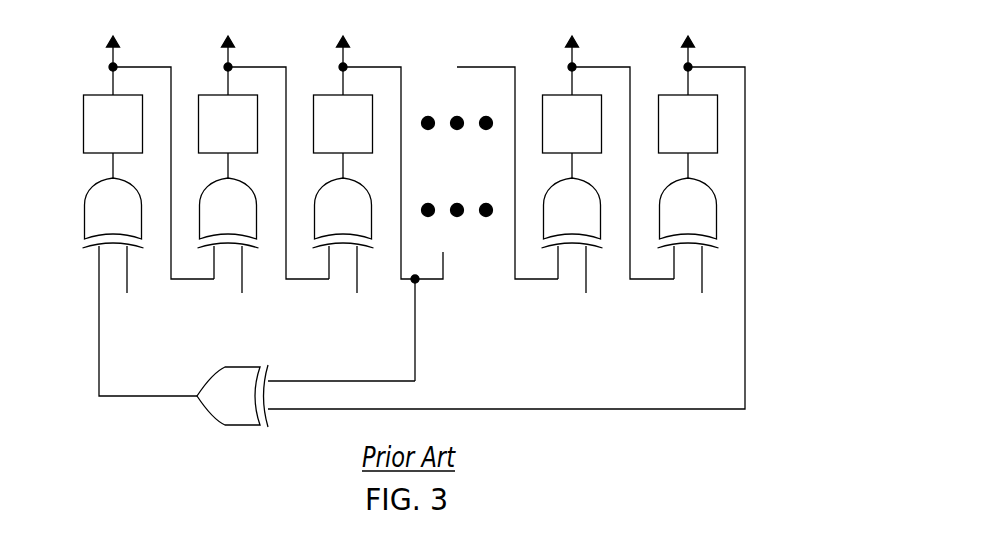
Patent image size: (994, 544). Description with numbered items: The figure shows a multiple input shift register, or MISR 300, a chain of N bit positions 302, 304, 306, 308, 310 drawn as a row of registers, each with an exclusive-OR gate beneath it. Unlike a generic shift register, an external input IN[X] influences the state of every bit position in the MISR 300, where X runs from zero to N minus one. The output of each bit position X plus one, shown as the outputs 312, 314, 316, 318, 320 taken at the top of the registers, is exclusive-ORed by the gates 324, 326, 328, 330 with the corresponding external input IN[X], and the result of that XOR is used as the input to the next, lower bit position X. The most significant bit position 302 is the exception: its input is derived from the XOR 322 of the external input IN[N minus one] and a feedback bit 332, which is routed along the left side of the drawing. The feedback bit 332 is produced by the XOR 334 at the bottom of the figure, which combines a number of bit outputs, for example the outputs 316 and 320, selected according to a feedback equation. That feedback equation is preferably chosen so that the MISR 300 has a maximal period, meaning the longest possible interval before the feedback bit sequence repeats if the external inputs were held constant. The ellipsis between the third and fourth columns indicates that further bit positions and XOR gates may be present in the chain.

The multiple input shift register 300 is at (444, 266).
The most significant bit position 302 is at (96, 136).
The bit position 304 is at (211, 136).
The bit position 306 is at (326, 136).
The bit position 308 is at (555, 136).
The bit position 310 is at (671, 136).
The bit position output 312 is at (110, 81).
The bit position output 314 is at (225, 81).
The bit position output 316 is at (340, 81).
The bit position output 318 is at (569, 81).
The bit position output 320 is at (685, 81).
The XOR 322 is at (96, 231).
The XOR 324 is at (211, 231).
The XOR 326 is at (326, 231).
The XOR 328 is at (555, 231).
The XOR 330 is at (671, 231).
The feedback bit 332 is at (99, 381).
The XOR 334 is at (216, 407).